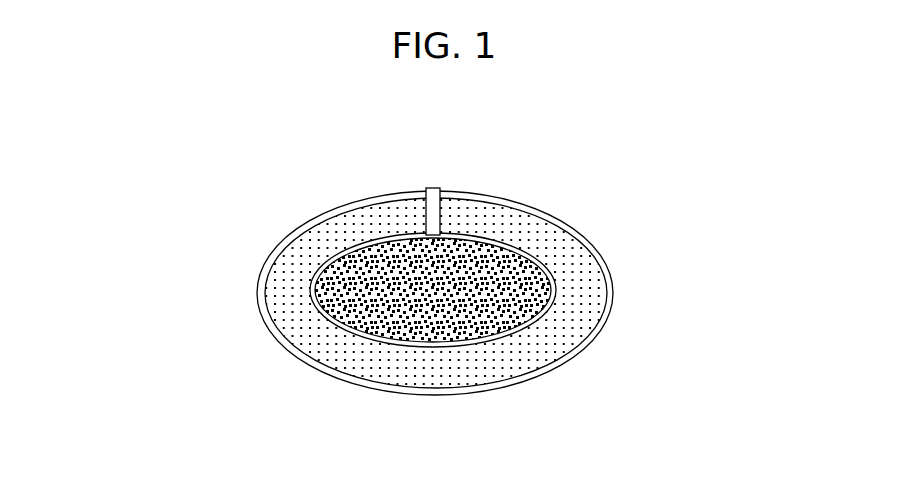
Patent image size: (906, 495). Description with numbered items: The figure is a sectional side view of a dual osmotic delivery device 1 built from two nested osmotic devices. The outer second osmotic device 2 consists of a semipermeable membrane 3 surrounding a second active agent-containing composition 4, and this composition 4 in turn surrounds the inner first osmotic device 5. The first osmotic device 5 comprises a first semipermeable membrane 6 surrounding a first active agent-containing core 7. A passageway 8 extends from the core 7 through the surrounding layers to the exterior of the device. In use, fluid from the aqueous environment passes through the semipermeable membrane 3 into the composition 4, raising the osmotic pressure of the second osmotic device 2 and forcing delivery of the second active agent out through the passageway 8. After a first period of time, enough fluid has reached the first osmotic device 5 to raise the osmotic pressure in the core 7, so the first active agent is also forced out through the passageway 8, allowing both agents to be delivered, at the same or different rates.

The dual osmotic delivery device 1 is at (433, 286).
The second osmotic device 2 is at (538, 285).
The semipermeable membrane 3 is at (613, 255).
The second active agent-containing composition 4 is at (595, 295).
The first osmotic device 5 is at (329, 289).
The first semipermeable membrane 6 is at (327, 257).
The first active agent-containing core 7 is at (327, 285).
The passageway 8 is at (442, 208).